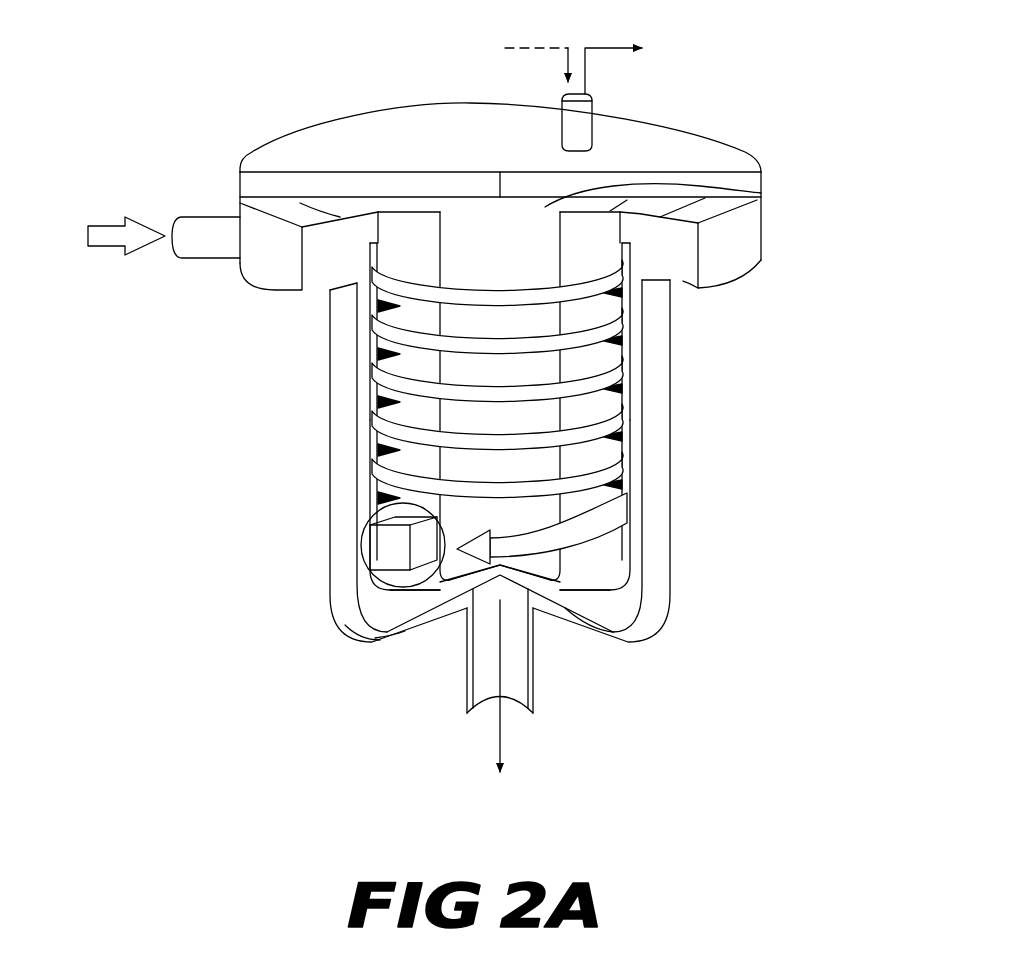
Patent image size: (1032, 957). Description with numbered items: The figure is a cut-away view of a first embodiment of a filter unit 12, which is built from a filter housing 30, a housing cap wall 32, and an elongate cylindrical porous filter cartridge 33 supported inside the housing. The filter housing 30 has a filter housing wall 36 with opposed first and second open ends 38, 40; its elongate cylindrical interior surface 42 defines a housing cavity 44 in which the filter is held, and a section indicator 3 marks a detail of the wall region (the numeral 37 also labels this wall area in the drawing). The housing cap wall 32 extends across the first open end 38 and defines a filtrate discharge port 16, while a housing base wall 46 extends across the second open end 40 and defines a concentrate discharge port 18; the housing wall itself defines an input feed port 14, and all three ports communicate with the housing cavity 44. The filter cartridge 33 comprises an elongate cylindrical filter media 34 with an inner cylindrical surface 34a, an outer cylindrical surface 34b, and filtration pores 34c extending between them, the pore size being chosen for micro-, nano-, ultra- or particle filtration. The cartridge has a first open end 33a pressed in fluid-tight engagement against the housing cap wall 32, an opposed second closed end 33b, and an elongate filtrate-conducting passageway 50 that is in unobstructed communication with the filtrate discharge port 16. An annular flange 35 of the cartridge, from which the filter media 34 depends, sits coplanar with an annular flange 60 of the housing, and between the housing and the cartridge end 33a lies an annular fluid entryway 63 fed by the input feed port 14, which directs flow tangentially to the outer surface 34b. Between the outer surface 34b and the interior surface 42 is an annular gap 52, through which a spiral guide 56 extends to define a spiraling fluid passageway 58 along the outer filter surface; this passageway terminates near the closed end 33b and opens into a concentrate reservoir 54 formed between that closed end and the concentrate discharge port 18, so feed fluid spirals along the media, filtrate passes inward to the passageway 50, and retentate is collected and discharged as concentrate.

The filter unit 12 is at (822, 434).
The input feed port 14 is at (168, 246).
The filtrate discharge port 16 is at (590, 93).
The concentrate discharge port 18 is at (513, 678).
The filter housing 30 is at (458, 461).
The housing cap wall 32 is at (705, 146).
The filter cartridge 33 is at (400, 227).
The first open end 33a is at (761, 193).
The second closed end 33b is at (553, 598).
The filter media 34 is at (497, 463).
The inner cylindrical surface 34a is at (455, 432).
The outer cylindrical surface 34b is at (598, 513).
The filtration pores 34c is at (420, 600).
The annular flange 35 is at (340, 208).
The filter housing wall 36 is at (352, 338).
The housing inner wall 37 is at (350, 492).
The first open end 38 is at (494, 240).
The second open end 40 is at (378, 603).
The interior surface 42 is at (403, 620).
The housing cavity 44 is at (620, 585).
The housing base wall 46 is at (393, 640).
The filtrate-conducting passageway 50 is at (545, 472).
The annular gap 52 is at (597, 413).
The concentrate reservoir 54 is at (577, 598).
The spiral guide 56 is at (372, 300).
The spiraling fluid passageway 58 is at (365, 452).
The annular flange 60 is at (737, 240).
The annular fluid entryway 63 is at (640, 262).
The section indicator FIG. 3 is at (363, 553).